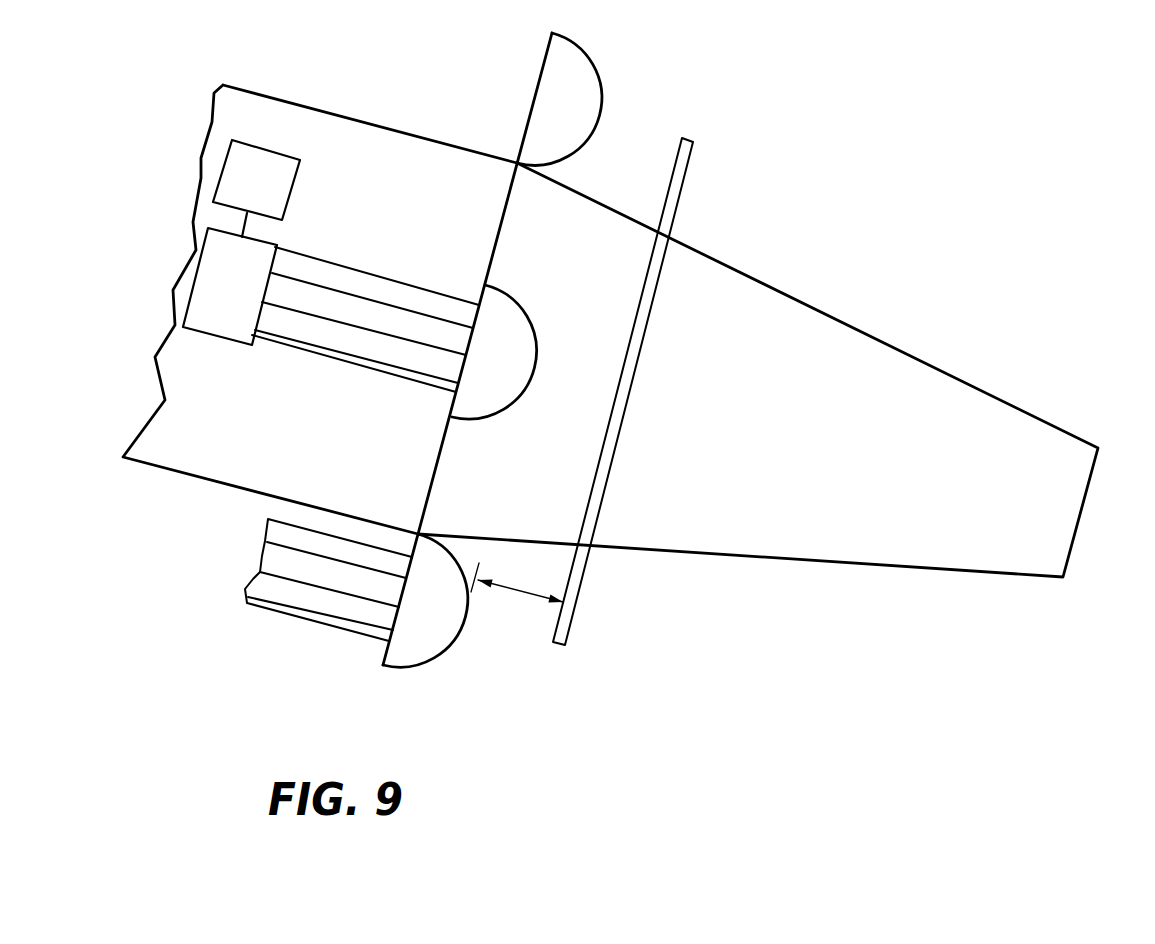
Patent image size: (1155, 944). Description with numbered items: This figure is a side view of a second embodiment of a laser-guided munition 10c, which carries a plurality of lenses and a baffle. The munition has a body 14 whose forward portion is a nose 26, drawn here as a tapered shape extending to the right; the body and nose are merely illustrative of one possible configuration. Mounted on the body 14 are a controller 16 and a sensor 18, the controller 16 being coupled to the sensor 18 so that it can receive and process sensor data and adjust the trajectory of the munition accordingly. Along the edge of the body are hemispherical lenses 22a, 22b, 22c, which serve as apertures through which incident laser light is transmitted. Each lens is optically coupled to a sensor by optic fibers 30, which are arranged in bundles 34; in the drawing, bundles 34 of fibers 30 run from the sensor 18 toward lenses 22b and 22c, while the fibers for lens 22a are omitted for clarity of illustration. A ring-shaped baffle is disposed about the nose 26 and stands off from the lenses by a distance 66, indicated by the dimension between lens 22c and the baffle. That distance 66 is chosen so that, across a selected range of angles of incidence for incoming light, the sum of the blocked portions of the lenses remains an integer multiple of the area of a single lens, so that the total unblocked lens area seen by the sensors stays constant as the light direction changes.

The laser-guided munition 10c is at (635, 371).
The body 14 is at (215, 483).
The controller 16 is at (280, 185).
The sensor 18 is at (215, 327).
The lens 22a is at (602, 105).
The lens 22b is at (530, 383).
The lens 22c is at (428, 667).
The nose 26 is at (1085, 505).
The optic fiber 30 is at (378, 352).
The bundle 34 is at (353, 465).
The distance 66 is at (518, 593).